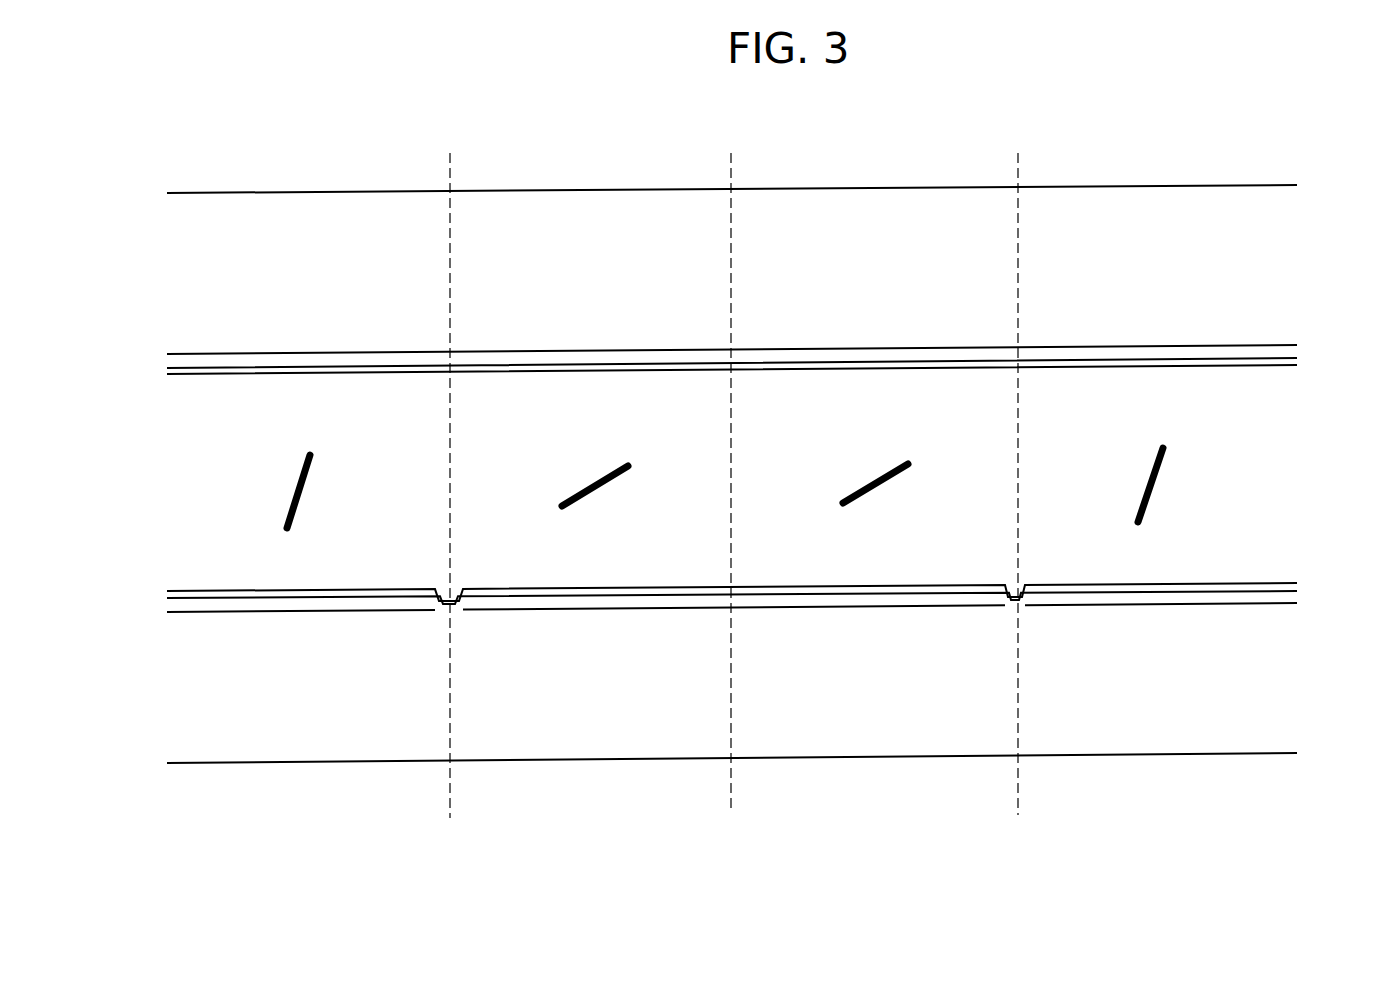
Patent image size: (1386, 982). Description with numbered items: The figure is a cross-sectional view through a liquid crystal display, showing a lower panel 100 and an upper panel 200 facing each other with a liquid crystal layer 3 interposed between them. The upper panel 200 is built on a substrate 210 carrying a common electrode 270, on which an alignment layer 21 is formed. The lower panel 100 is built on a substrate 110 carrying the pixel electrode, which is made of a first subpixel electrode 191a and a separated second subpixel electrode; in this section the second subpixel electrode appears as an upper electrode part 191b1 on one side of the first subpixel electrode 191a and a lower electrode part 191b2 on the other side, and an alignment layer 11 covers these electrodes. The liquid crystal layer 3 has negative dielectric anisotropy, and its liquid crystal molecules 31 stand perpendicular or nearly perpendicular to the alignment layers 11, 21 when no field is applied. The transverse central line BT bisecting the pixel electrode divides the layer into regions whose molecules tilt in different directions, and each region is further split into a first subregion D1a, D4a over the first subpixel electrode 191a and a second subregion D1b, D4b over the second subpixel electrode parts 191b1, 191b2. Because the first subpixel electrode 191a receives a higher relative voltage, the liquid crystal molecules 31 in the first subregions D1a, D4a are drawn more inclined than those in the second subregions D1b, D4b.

The liquid crystal layer 3 is at (1320, 368).
The alignment layer 11 is at (1255, 583).
The alignment layer 21 is at (1255, 365).
The liquid crystal molecule 31 is at (1152, 485).
The lower panel 100 is at (1320, 585).
The substrate 110 is at (883, 727).
The first subpixel electrode 191a is at (617, 607).
The upper electrode part 191b1 is at (305, 608).
The lower electrode part 191b2 is at (1153, 603).
The upper panel 200 is at (1320, 185).
The substrate 210 is at (883, 222).
The common electrode 270 is at (582, 352).
The transverse central line BT is at (734, 469).
The second subregion D4b is at (256, 429).
The first subregion D4a is at (548, 428).
The first subregion D1a is at (831, 428).
The second subregion D1b is at (1114, 423).